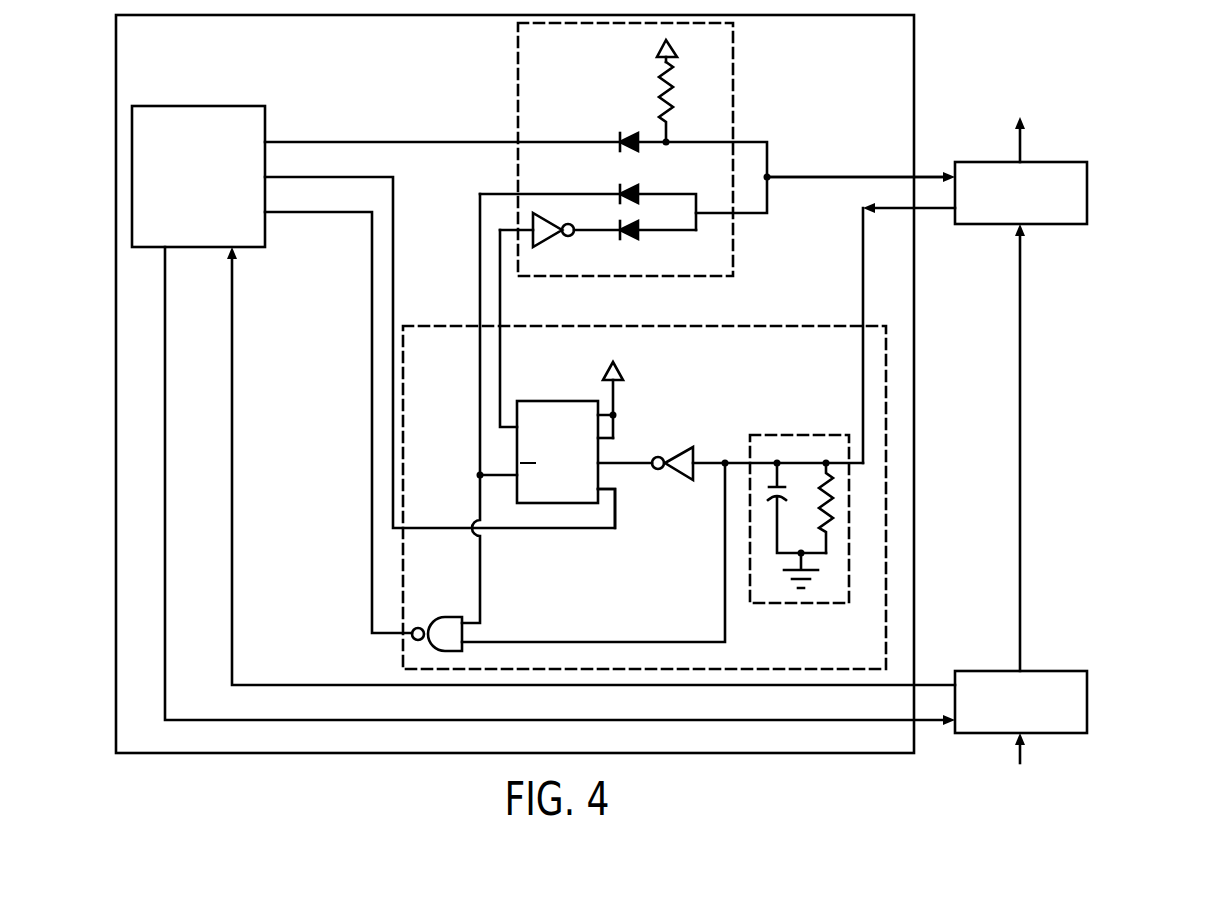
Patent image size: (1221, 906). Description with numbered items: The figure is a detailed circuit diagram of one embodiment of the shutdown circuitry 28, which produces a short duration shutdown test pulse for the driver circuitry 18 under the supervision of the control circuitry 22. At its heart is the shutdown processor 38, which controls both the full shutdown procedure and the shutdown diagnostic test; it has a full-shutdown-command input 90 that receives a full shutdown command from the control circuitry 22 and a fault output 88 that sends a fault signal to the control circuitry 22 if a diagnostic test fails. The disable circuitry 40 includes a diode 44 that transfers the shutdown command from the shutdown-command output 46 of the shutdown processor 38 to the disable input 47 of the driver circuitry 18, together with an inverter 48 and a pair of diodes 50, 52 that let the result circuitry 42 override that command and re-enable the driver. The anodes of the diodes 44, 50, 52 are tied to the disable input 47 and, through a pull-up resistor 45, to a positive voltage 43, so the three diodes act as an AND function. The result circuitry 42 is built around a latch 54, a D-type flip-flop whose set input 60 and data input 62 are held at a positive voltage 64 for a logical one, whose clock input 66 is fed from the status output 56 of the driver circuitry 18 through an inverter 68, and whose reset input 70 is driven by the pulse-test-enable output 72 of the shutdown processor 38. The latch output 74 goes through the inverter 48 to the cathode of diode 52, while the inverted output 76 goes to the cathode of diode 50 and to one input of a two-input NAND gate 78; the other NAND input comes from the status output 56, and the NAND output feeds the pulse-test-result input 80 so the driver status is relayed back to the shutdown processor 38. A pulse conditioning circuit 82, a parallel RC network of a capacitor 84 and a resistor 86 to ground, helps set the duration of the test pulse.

The driver circuitry 18 is at (1087, 190).
The control circuitry 22 is at (1087, 702).
The shutdown circuitry 28 is at (114, 88).
The shutdown processor 38 is at (198, 106).
The disable circuitry 40 is at (517, 75).
The result circuitry 42 is at (440, 326).
The positive voltage 43 is at (677, 50).
The diode 44 is at (620, 148).
The pull-up resistor 45 is at (678, 97).
The shutdown-command output 46 is at (480, 144).
The disable input 47 is at (826, 182).
The inverter 48 is at (552, 218).
The diode 50 is at (640, 186).
The diode 52 is at (640, 238).
The latch 54 is at (562, 401).
The status output 56 is at (863, 255).
The set input 60 is at (614, 412).
The data input 62 is at (601, 440).
The positive voltage 64 is at (626, 372).
The clock input 66 is at (627, 466).
The inverter 68 is at (672, 452).
The reset input 70 is at (616, 509).
The pulse-test-enable output 72 is at (390, 176).
The output 74 is at (502, 372).
The inverted output 76 is at (495, 478).
The two-input NAND gate 78 is at (452, 616).
The pulse-test-result input 80 is at (315, 213).
The pulse conditioning circuit 82 is at (798, 435).
The capacitor 84 is at (785, 492).
The resistor 86 is at (832, 488).
The fault output 88 is at (166, 482).
The full-shutdown-command input 90 is at (233, 470).